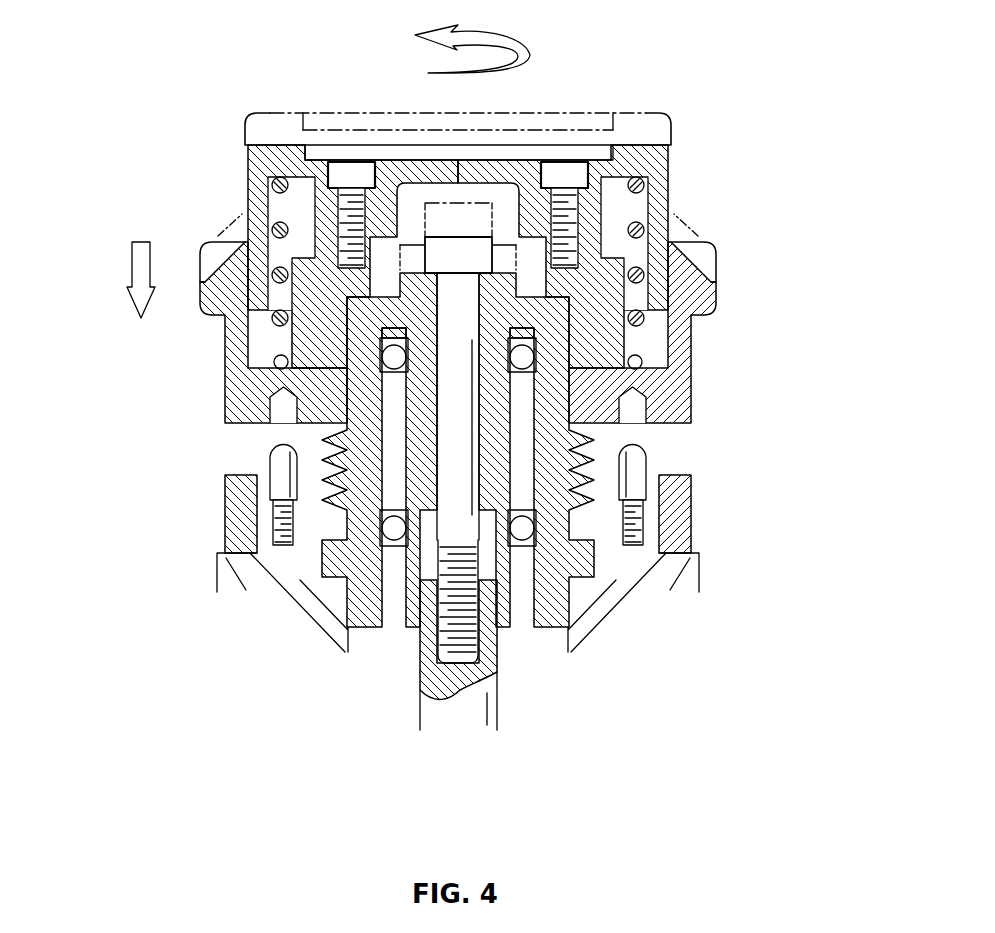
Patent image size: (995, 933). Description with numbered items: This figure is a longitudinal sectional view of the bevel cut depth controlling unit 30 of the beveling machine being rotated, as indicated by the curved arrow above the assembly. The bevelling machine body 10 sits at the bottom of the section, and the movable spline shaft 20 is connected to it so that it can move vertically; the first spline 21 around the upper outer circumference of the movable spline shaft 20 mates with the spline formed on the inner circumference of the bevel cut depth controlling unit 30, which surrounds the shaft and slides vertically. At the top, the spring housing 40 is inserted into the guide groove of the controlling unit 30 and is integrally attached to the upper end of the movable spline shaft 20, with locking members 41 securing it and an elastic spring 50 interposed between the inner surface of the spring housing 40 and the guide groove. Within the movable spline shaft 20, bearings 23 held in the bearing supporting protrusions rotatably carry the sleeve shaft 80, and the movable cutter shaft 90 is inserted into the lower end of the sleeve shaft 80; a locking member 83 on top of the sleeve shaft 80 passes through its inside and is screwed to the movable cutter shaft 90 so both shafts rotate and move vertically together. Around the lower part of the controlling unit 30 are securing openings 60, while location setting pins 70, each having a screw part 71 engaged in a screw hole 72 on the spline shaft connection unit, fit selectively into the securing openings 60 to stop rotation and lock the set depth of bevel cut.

The bevelling machine body 10 is at (290, 568).
The movable spline shaft 20 is at (560, 298).
The first spline 21 is at (325, 227).
The bearing 23 is at (526, 355).
The bevel cut depth controlling unit 30 is at (232, 342).
The spring housing 40 is at (648, 160).
The locking member 41 is at (354, 176).
The elastic spring 50 is at (636, 228).
The securing opening 60 is at (636, 404).
The location setting pin 70 is at (280, 456).
The screw part 71 is at (278, 510).
The screw hole 72 is at (265, 536).
The sleeve shaft 80 is at (600, 518).
The locking member 83 is at (462, 252).
The movable cutter shaft 90 is at (468, 694).